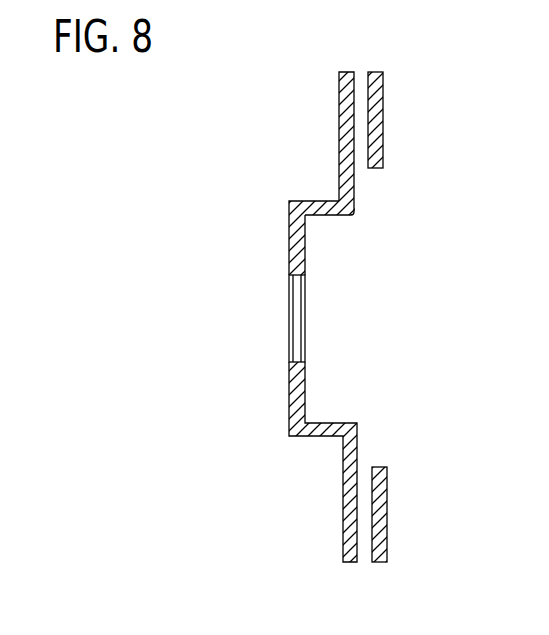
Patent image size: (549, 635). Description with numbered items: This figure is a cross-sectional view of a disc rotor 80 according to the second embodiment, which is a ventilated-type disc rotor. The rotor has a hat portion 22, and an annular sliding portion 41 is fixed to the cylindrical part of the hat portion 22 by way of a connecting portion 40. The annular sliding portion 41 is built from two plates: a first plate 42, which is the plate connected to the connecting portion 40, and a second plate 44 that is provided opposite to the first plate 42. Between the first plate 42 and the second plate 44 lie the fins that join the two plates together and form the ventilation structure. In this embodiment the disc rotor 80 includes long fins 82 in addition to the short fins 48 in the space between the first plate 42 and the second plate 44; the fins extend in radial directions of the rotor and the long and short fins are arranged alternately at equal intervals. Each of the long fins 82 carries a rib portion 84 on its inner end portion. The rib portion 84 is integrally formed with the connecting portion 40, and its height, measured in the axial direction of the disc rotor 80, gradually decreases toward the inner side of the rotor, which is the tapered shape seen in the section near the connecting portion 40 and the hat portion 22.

The hat portion 22 is at (289, 267).
The connecting portion 40 is at (347, 443).
The annular sliding portion 41 is at (374, 124).
The first plate 42 is at (340, 90).
The second plate 44 is at (383, 92).
The short fins 48 is at (363, 553).
The disc rotor 80 is at (293, 194).
The long fins 82 is at (357, 84).
The rib portion 84 is at (359, 179).